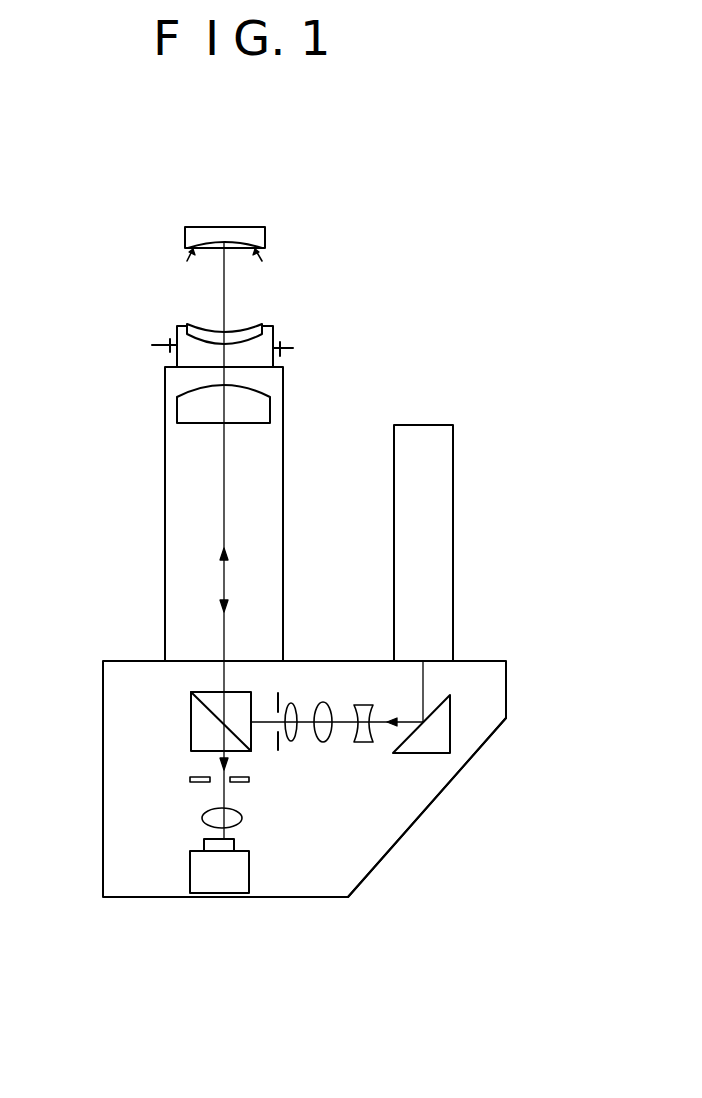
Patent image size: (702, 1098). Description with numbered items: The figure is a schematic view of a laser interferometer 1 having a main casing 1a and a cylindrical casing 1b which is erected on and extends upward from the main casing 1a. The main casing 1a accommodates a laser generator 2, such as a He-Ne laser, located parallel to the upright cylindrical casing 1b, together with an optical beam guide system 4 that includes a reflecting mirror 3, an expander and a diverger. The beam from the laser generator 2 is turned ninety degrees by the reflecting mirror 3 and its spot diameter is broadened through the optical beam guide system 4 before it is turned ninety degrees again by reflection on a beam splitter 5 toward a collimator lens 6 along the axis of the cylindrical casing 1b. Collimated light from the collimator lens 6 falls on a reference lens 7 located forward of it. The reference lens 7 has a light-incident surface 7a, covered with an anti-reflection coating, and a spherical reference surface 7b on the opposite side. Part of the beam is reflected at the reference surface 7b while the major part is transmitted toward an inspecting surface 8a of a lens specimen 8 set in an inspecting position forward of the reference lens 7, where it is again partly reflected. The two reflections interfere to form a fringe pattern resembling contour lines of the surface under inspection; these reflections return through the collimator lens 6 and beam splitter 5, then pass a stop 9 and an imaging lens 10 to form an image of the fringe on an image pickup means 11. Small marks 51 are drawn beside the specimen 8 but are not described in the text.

The interferometer 1 is at (506, 660).
The main casing 1a is at (506, 692).
The cylindrical casing 1b is at (165, 552).
The laser generator 2 is at (453, 485).
The reflecting mirror 3 is at (428, 755).
The optical beam guide system 4 is at (382, 758).
The beam splitter 5 is at (191, 720).
The collimator lens 6 is at (270, 407).
The reference lens 7 is at (262, 323).
The light-incident surface 7a is at (177, 347).
The spherical reference surface 7b is at (192, 322).
The lens specimen 8 is at (205, 228).
The inspecting surface 8a is at (240, 246).
The alignment marks 51 is at (262, 258).
The stop 9 is at (190, 779).
The imaging lens 10 is at (242, 818).
The image pickup means 11 is at (220, 893).